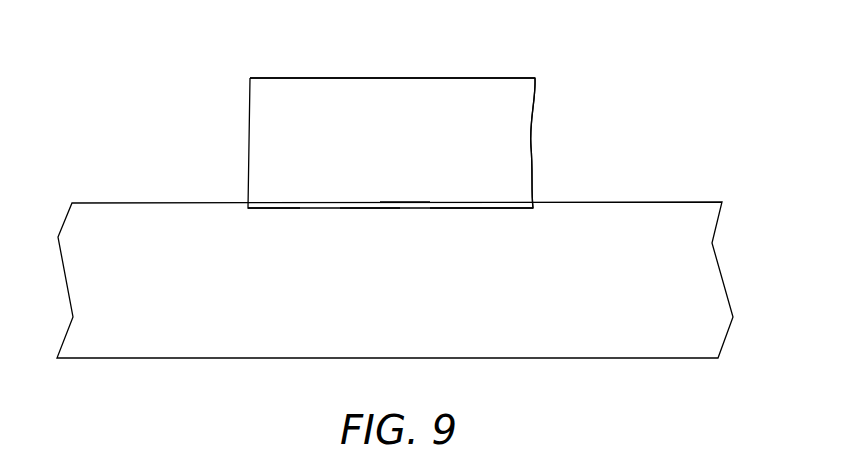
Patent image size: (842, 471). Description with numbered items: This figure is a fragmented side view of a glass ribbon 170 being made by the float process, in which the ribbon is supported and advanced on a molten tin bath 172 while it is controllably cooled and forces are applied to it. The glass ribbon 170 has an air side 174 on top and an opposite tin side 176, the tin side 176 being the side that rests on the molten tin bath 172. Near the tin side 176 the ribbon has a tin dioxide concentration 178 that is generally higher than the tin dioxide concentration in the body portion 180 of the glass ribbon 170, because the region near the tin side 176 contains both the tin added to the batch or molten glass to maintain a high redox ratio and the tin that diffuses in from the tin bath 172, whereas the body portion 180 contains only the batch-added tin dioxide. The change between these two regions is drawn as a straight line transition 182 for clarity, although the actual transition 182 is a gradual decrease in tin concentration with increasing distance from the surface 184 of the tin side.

The glass ribbon 170 is at (496, 92).
The molten tin bath 172 is at (180, 358).
The air side 174 is at (377, 78).
The tin side 176 is at (278, 208).
The tin dioxide concentration at the tin side 178 is at (450, 208).
The body portion 180 is at (513, 147).
The transition 182 is at (402, 202).
The surface of the tin side 184 is at (368, 208).